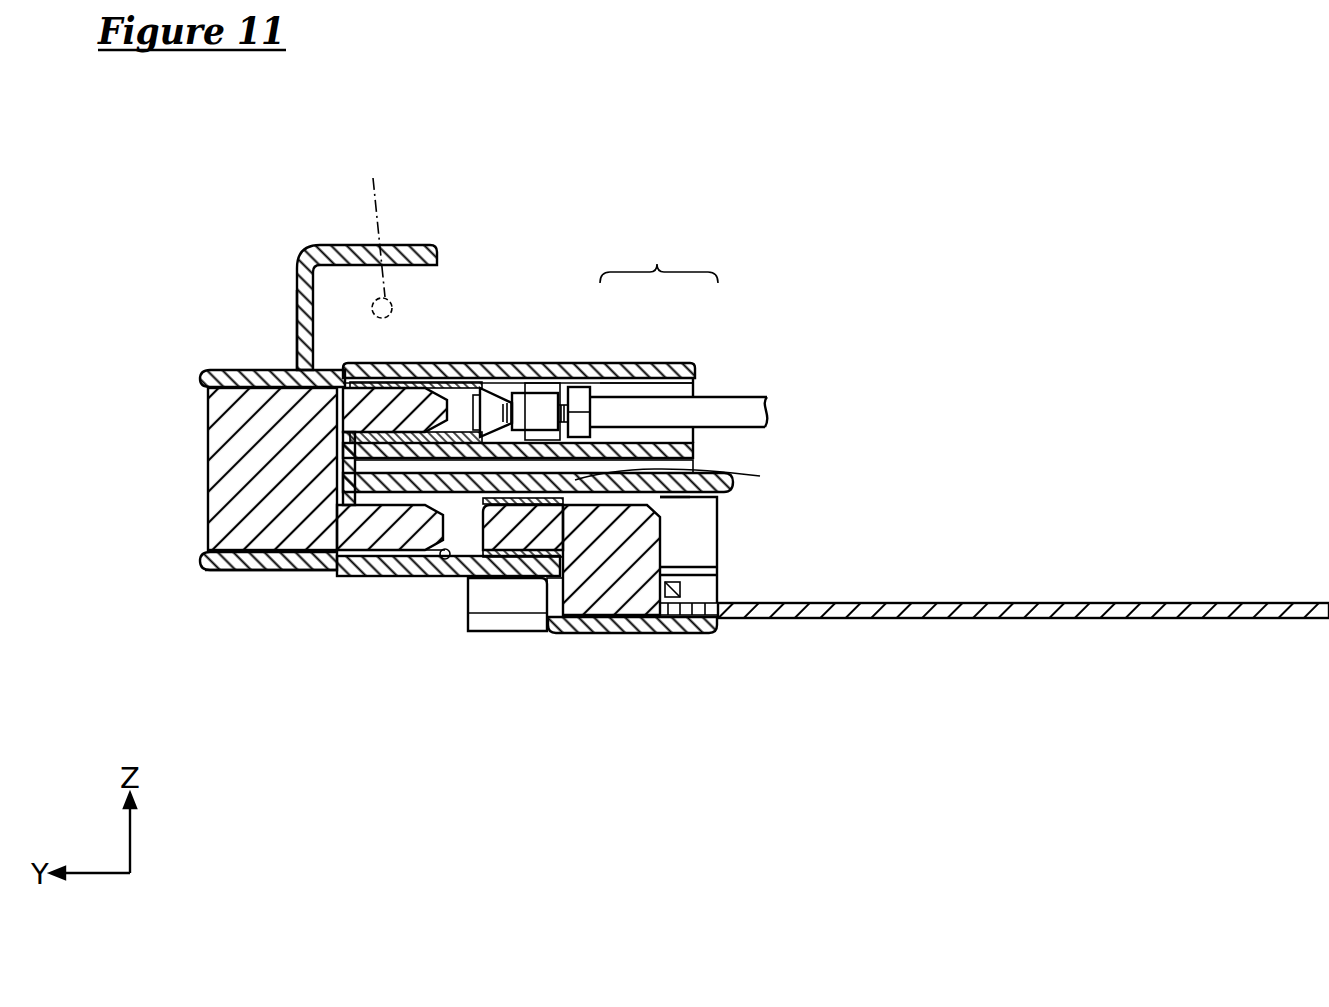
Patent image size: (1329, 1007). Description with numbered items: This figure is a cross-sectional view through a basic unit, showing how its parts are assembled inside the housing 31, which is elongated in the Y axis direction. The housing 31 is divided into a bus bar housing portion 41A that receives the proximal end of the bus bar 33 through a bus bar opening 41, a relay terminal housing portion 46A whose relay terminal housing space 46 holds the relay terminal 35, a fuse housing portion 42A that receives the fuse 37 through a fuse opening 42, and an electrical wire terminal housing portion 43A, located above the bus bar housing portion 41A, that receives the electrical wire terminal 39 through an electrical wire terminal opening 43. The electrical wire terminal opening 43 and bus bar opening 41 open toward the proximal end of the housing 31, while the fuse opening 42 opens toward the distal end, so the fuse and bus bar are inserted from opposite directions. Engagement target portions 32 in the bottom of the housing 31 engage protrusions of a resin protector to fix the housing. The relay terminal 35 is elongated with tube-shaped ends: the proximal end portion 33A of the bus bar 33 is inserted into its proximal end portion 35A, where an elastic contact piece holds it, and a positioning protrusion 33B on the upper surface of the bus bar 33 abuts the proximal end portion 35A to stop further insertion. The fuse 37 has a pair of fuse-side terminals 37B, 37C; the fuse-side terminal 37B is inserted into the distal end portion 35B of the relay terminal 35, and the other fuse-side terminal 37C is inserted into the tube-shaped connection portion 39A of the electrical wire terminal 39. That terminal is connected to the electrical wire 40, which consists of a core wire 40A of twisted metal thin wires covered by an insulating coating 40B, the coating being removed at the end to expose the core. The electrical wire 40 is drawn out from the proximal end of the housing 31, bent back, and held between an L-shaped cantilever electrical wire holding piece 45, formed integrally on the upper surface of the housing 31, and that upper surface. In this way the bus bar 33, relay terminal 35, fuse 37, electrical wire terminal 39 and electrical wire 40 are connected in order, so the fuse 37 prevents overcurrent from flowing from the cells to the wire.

The housing 31 is at (469, 371).
The engagement target portion 32 is at (489, 620).
The bus bar 33 is at (1071, 610).
The proximal end portion 33A is at (547, 530).
The positioning protrusion 33B is at (760, 476).
The relay terminal 35 is at (470, 556).
The proximal end portion 35A is at (540, 583).
The distal end portion 35B is at (390, 571).
The fuse 37 is at (184, 410).
The fuse-side terminal 37B is at (360, 577).
The fuse-side terminal 37C is at (397, 410).
The electrical wire terminal 39 is at (498, 398).
The connection portion 39A is at (400, 415).
The electrical wire 40 is at (538, 233).
The core wire 40A is at (568, 392).
The insulating coating 40B is at (728, 412).
The bus bar opening 41 is at (693, 493).
The bus bar housing portion 41A is at (625, 484).
The fuse opening 42 is at (237, 550).
The fuse housing portion 42A is at (247, 566).
The electrical wire terminal opening 43 is at (660, 380).
The electrical wire terminal housing portion 43A is at (549, 372).
The electrical wire holding piece 45 is at (350, 251).
The relay terminal housing space 46 is at (432, 568).
The relay terminal housing portion 46A is at (408, 577).